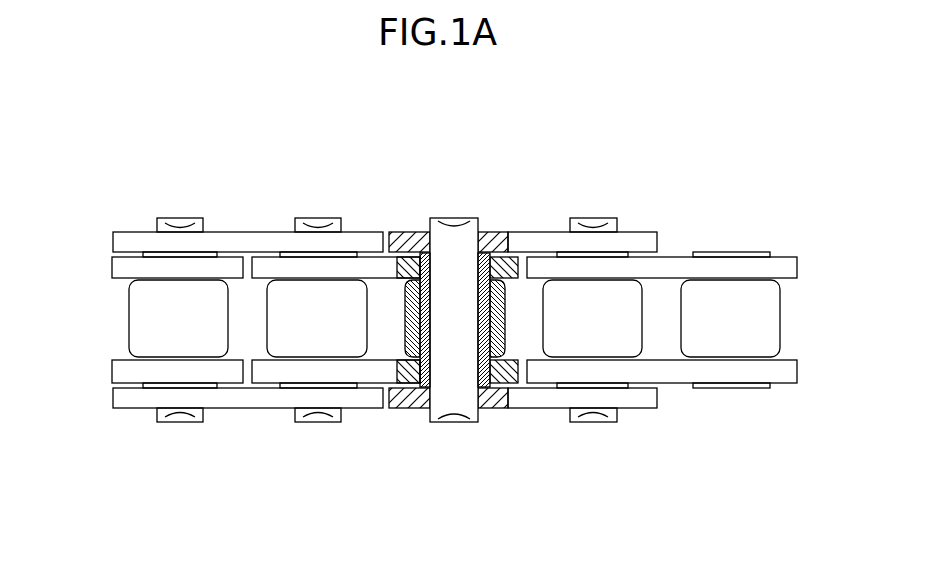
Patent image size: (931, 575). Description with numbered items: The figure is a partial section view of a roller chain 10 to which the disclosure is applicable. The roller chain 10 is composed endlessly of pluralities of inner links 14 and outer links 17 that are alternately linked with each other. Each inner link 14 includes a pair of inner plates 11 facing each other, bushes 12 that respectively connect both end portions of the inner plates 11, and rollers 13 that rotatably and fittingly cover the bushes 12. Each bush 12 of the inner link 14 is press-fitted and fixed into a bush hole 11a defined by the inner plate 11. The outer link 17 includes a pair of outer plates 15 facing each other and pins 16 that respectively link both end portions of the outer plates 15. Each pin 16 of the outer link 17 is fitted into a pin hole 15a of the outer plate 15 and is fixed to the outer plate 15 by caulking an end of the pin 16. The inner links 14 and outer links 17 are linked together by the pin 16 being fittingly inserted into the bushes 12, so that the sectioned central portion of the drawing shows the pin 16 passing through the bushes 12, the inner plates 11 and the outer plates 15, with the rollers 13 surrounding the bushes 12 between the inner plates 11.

The roller chain 10 is at (627, 183).
The inner plate 11 is at (673, 265).
The bush hole 11a is at (470, 263).
The bush 12 is at (490, 372).
The roller 13 is at (410, 328).
The inner link 14 is at (760, 226).
The outer plate 15 is at (130, 238).
The pin hole 15a is at (430, 395).
The pin 16 is at (178, 222).
The outer link 17 is at (272, 224).